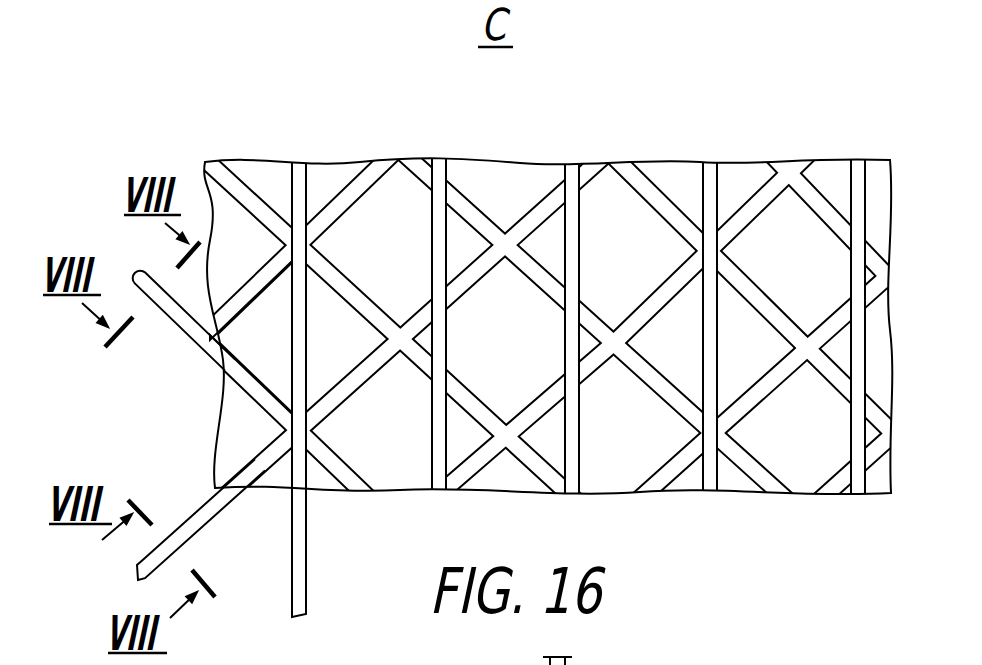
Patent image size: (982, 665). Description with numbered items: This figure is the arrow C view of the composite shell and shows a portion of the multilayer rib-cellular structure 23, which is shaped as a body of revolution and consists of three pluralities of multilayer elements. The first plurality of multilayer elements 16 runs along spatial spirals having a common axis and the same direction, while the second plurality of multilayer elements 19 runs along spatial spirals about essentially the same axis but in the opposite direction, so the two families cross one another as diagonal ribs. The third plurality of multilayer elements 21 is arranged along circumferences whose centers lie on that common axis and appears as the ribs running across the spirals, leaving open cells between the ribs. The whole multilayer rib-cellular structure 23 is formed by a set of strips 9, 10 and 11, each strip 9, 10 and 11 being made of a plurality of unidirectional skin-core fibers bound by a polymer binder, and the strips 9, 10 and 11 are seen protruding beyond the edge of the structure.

The strip 9 is at (153, 557).
The strip 10 is at (138, 275).
The strip 11 is at (300, 605).
The first plurality of multilayer elements 16 is at (667, 287).
The second plurality of multilayer elements 19 is at (675, 395).
The third plurality of multilayer elements 21 is at (432, 213).
The multilayer rib-cellular structure 23 is at (265, 350).